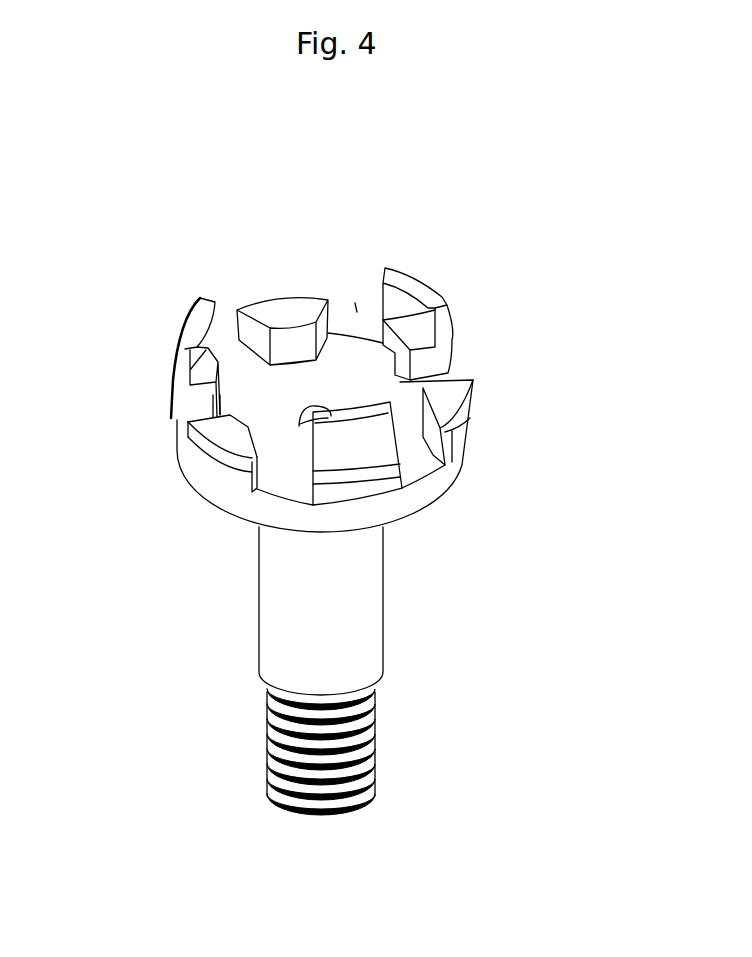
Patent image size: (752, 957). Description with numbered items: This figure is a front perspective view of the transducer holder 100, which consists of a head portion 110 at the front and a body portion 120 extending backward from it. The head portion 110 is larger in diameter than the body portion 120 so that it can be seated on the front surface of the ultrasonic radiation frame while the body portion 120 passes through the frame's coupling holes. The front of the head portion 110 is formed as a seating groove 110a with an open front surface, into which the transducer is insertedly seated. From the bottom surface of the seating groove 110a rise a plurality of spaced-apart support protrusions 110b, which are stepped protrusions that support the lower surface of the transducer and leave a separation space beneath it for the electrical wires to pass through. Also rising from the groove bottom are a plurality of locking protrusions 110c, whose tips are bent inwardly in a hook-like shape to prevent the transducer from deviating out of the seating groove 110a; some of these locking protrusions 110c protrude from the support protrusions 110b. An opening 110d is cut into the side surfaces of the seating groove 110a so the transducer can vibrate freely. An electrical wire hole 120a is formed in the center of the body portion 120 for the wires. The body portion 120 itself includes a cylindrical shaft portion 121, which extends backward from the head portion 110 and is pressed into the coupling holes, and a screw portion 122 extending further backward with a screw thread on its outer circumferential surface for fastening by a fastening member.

The transducer holder 100 is at (106, 165).
The head portion 110 is at (473, 469).
The seating groove 110a is at (257, 384).
The support protrusion 110b is at (283, 305).
The locking protrusion 110c is at (182, 340).
The opening 110d is at (357, 310).
The body portion 120 is at (486, 630).
The electrical wire hole 120a is at (308, 420).
The shaft portion 121 is at (375, 626).
The screw portion 122 is at (372, 752).